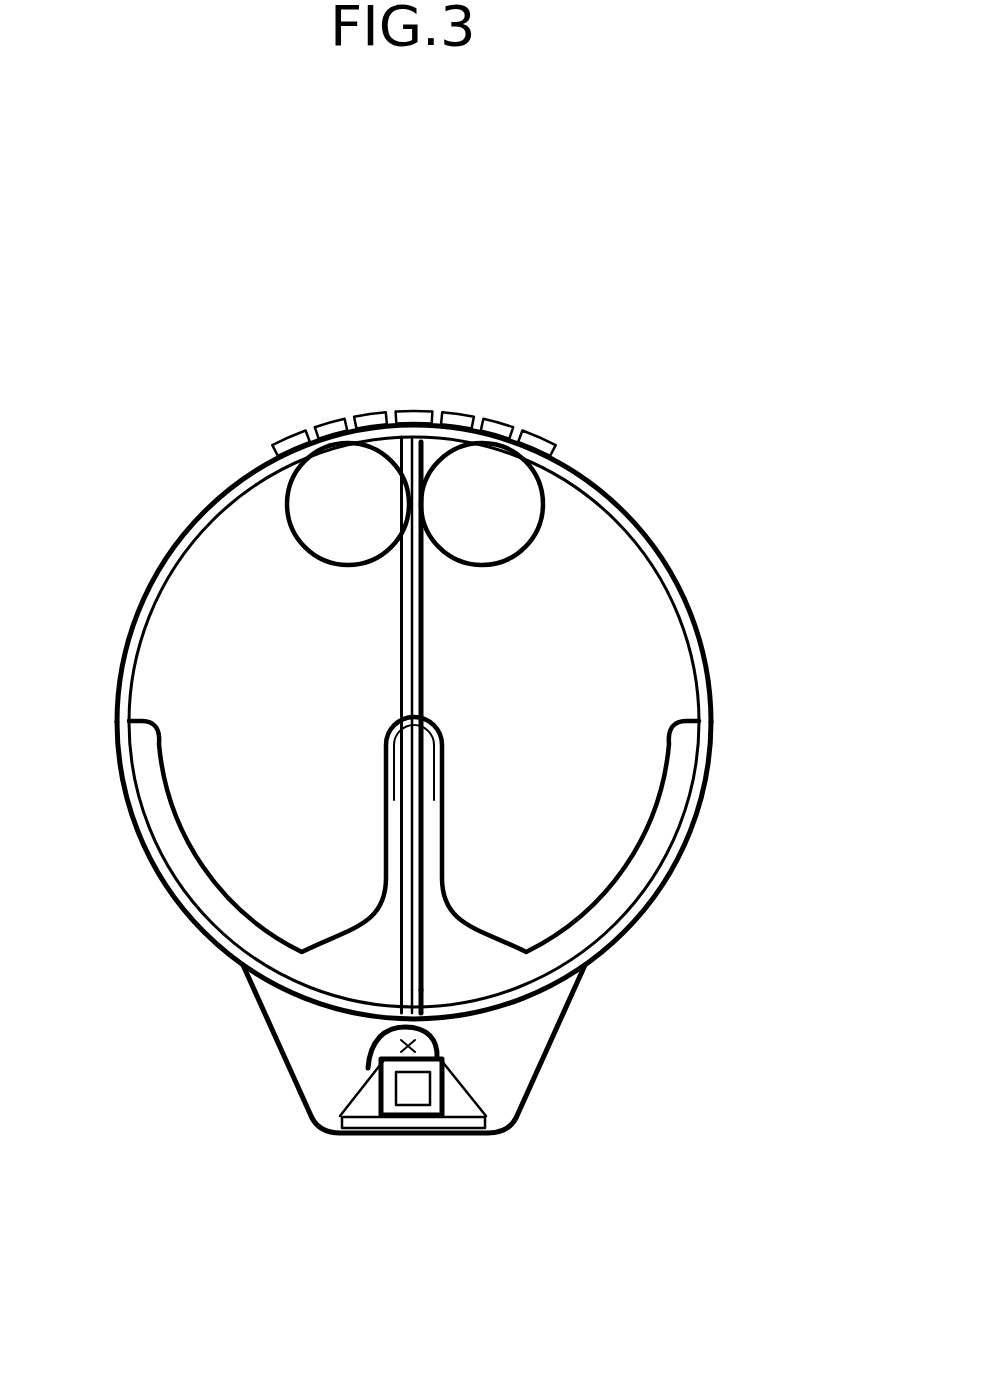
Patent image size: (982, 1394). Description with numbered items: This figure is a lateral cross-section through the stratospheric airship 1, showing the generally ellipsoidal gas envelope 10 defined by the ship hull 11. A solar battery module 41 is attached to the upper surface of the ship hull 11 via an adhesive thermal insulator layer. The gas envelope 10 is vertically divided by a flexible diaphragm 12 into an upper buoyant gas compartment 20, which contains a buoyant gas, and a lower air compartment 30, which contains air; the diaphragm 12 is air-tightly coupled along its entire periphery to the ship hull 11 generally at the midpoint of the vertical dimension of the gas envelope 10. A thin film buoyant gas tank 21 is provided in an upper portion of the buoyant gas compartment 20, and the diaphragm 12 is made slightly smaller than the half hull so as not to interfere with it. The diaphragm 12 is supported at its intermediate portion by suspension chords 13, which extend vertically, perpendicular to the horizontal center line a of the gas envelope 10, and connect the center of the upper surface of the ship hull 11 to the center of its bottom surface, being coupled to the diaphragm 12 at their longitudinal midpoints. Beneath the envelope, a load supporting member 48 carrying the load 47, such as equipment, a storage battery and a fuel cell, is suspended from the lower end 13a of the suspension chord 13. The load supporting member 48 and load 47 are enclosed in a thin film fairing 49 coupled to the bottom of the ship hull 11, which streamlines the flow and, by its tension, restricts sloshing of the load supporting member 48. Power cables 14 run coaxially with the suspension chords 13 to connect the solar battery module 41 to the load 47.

The stratospheric airship 1 is at (250, 437).
The gas envelope 10 is at (658, 558).
The ship hull 11 is at (680, 617).
The diaphragm 12 is at (190, 862).
The suspension chord 13 is at (410, 648).
The lower end of suspension chord 13a is at (433, 996).
The power cable 14 is at (397, 967).
The buoyant gas compartment 20 is at (205, 590).
The thin film buoyant gas tank 21 is at (283, 512).
The air compartment 30 is at (220, 927).
The solar battery module 41 is at (495, 423).
The load 47 is at (416, 1108).
The load supporting member 48 is at (358, 1133).
The thin film fairing 49 is at (558, 1100).
The center line a is at (416, 713).